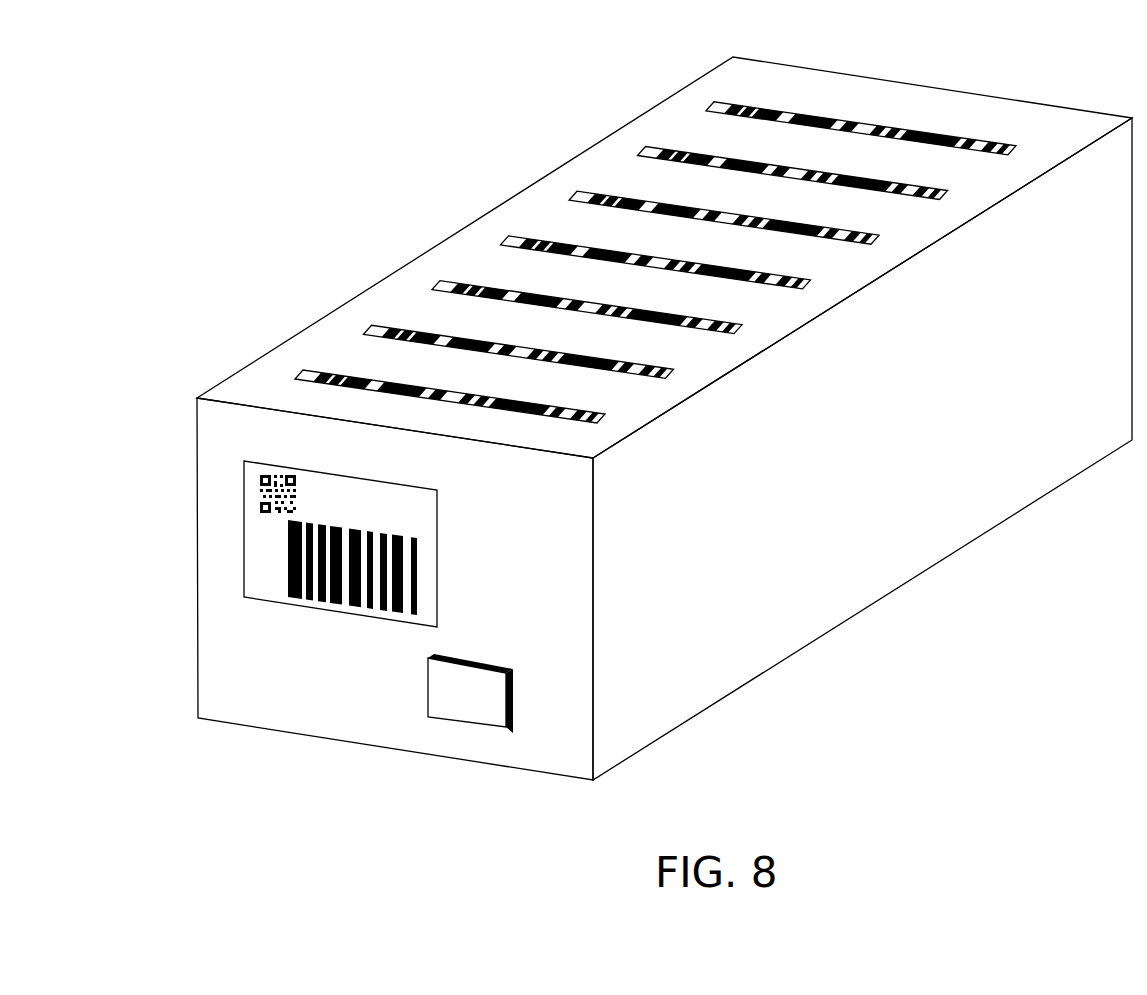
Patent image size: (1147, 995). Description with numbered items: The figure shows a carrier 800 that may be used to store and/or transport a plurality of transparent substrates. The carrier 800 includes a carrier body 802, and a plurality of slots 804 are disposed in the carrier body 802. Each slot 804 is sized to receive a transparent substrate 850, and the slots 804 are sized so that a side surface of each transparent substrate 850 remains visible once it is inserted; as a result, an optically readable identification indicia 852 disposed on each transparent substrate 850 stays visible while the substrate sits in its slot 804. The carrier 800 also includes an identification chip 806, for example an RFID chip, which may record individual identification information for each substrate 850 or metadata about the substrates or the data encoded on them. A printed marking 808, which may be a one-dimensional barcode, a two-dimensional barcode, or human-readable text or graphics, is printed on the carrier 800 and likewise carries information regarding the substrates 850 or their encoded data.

The carrier 800 is at (272, 186).
The carrier body 802 is at (863, 557).
The slot 804 is at (706, 111).
The identification chip 806 is at (482, 705).
The printed marking 808 is at (289, 578).
The transparent substrate 850 is at (592, 420).
The optically readable identification indicia 852 is at (462, 394).